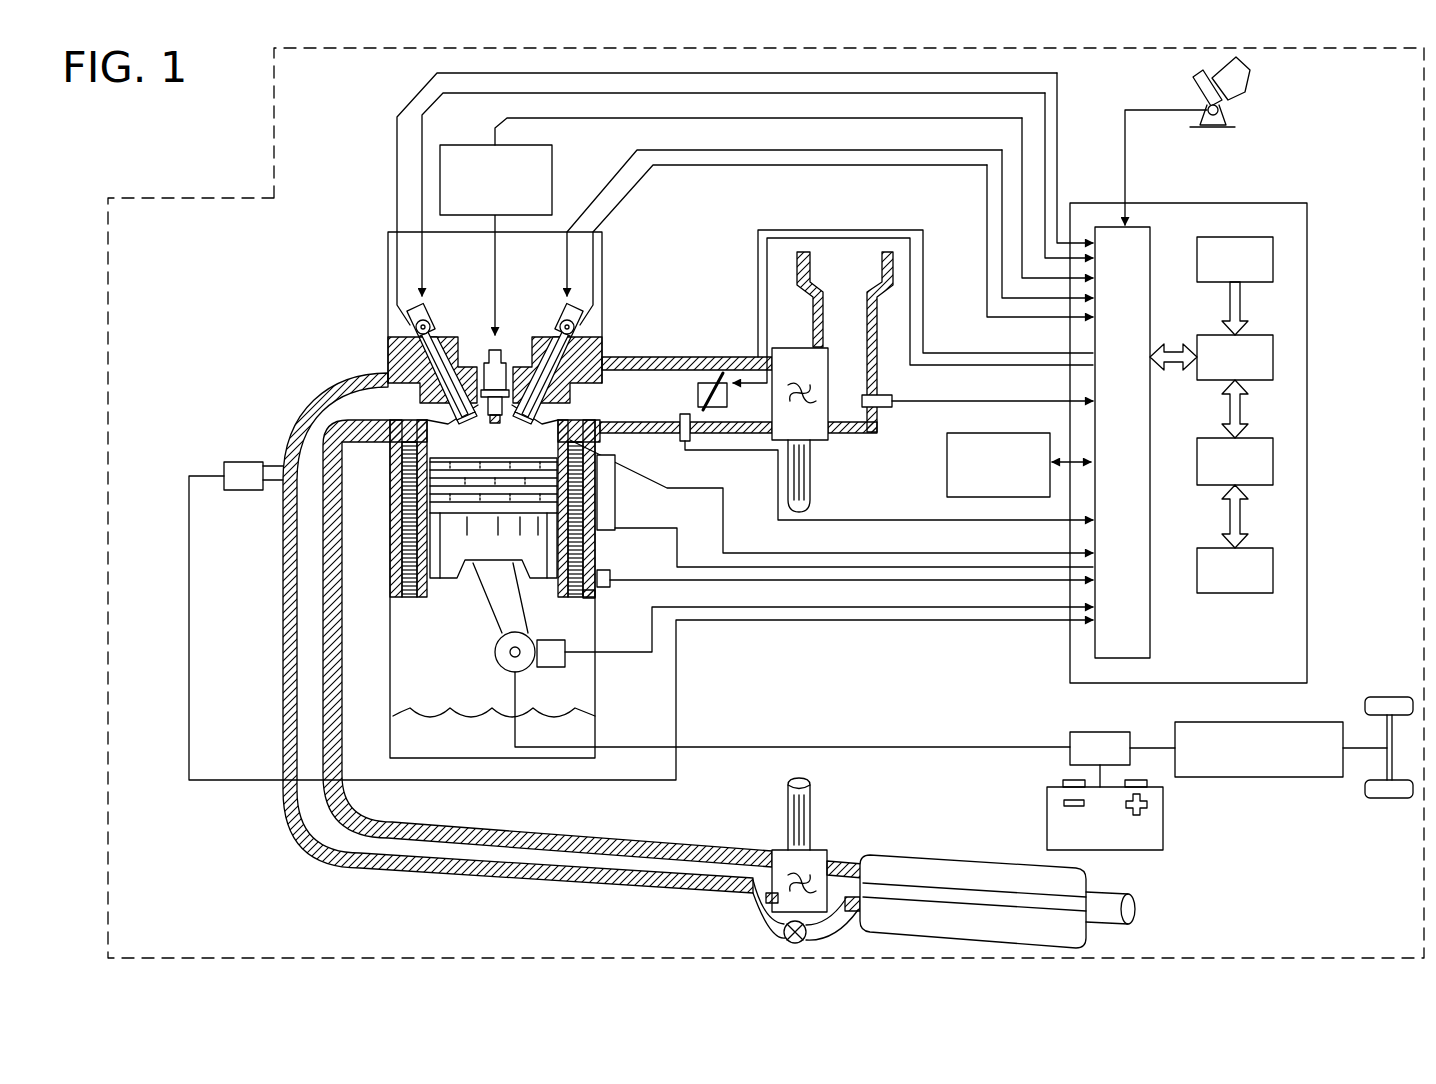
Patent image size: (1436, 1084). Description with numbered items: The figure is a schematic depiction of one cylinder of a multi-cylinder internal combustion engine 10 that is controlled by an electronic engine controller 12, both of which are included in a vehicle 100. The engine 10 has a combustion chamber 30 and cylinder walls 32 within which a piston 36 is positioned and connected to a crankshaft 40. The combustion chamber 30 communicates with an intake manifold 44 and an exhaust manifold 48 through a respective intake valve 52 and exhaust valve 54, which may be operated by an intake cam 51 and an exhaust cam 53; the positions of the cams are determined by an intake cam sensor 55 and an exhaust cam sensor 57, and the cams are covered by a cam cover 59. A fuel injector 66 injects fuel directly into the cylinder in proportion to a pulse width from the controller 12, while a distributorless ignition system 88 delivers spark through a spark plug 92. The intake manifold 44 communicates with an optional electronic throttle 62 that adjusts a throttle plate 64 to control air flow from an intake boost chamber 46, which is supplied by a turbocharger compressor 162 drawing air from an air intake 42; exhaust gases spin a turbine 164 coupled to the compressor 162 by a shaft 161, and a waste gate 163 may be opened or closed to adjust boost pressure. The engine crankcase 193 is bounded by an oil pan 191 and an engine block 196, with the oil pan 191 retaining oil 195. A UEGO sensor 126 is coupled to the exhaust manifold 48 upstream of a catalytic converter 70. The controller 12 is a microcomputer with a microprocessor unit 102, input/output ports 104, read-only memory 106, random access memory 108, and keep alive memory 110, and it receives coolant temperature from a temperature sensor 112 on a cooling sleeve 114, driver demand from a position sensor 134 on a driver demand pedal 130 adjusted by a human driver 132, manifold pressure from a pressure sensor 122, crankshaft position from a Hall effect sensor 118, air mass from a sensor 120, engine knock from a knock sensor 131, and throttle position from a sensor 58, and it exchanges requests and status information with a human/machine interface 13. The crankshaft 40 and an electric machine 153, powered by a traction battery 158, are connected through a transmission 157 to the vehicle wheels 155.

The internal combustion engine 10 is at (320, 291).
The electronic engine controller 12 is at (1235, 428).
The human/machine interface 13 is at (988, 474).
The combustion chamber 30 is at (493, 440).
The cylinder walls 32 is at (433, 583).
The piston 36 is at (473, 545).
The crankshaft 40 is at (500, 672).
The air intake 42 is at (833, 313).
The intake manifold 44 is at (640, 405).
The intake boost chamber 46 is at (760, 415).
The exhaust manifold 48 is at (370, 415).
The intake cam 51 is at (555, 325).
The intake valve 52 is at (548, 408).
The exhaust cam 53 is at (428, 306).
The exhaust valve 54 is at (437, 413).
The intake cam sensor 55 is at (580, 325).
The exhaust cam sensor 57 is at (410, 325).
The throttle position sensor 58 is at (728, 367).
The cam cover 59 is at (603, 250).
The electronic throttle 62 is at (873, 324).
The throttle plate 64 is at (700, 383).
The fuel injector 66 is at (600, 470).
The catalytic converter 70 is at (1003, 863).
The distributorless ignition system 88 is at (458, 147).
The spark plug 92 is at (498, 342).
The vehicle 100 is at (205, 198).
The microprocessor unit 102 is at (1273, 357).
The input/output ports 104 is at (1150, 235).
The read-only memory 106 is at (1273, 260).
The random access memory 108 is at (1273, 462).
The keep alive memory 110 is at (1273, 570).
The temperature sensor 112 is at (600, 515).
The cooling sleeve 114 is at (596, 598).
The Hall effect sensor 118 is at (546, 640).
The air mass sensor 120 is at (892, 400).
The pressure sensor 122 is at (683, 414).
The Universal Exhaust Gas Oxygen sensor 126 is at (224, 468).
The driver demand pedal 130 is at (1248, 140).
The knock sensor 131 is at (610, 578).
The human driver 132 is at (1240, 77).
The position sensor 134 is at (1227, 112).
The electric machine 153 is at (1110, 732).
The vehicle wheels 155 is at (1376, 697).
The transmission 157 is at (1283, 777).
The traction battery 158 is at (1105, 831).
The shaft 161 is at (810, 487).
The turbocharger compressor 162 is at (800, 348).
The turbocharger waste gate 163 is at (787, 937).
The turbine 164 is at (772, 852).
The oil pan 191 is at (594, 755).
The engine crankcase 193 is at (577, 679).
The oil 195 is at (716, 589).
The engine block 196 is at (398, 443).